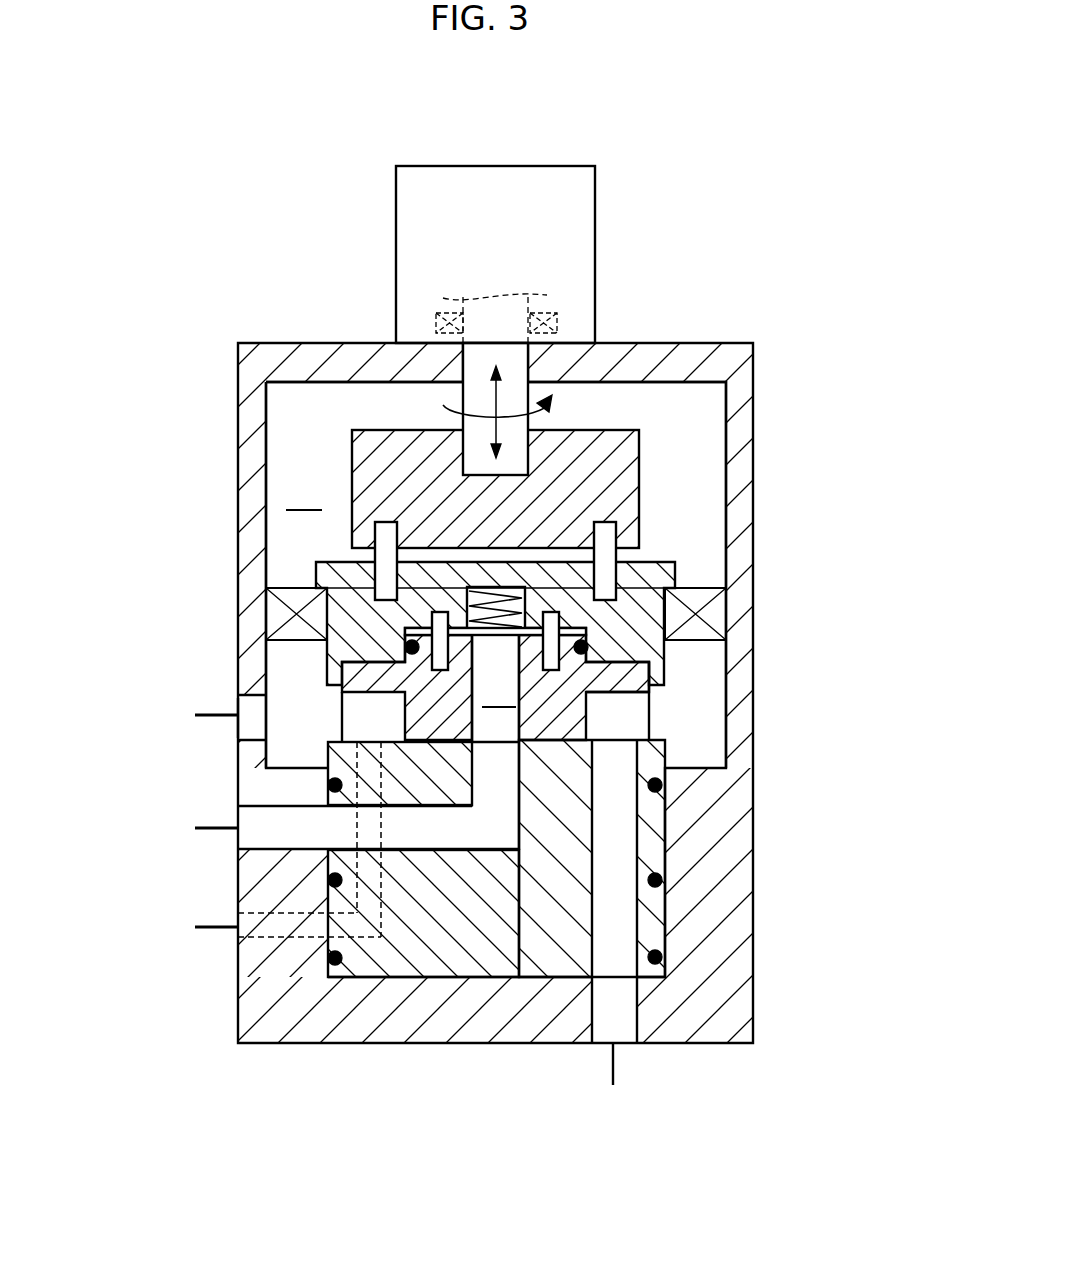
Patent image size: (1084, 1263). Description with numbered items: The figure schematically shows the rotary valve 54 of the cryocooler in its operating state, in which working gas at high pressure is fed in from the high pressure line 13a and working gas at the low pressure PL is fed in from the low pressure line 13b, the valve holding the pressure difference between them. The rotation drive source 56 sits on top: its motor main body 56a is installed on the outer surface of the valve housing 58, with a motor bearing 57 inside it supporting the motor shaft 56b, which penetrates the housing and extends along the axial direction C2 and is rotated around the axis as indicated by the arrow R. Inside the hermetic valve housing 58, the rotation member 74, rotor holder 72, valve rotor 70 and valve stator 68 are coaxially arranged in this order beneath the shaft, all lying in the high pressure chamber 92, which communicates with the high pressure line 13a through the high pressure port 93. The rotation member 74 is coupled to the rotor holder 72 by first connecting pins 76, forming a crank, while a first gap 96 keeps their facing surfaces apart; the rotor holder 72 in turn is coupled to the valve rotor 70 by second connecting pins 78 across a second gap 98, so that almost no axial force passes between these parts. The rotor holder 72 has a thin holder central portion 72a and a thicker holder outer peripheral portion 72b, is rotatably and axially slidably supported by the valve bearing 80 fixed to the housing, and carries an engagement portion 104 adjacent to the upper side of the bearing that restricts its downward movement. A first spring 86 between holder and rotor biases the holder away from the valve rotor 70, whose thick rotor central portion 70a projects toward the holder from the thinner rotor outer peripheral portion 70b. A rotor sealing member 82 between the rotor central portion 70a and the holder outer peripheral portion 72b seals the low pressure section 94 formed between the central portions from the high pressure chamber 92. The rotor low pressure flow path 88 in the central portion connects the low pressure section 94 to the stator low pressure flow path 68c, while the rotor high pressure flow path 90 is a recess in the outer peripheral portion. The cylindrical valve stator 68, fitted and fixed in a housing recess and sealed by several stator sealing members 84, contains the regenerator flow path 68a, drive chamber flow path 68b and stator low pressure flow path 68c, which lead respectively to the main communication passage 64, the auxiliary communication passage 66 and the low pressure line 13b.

The high pressure line 13a is at (210, 720).
The low pressure line 13b is at (210, 832).
The rotary valve 54 is at (512, 1224).
The rotation drive source 56 is at (520, 212).
The motor main body 56a is at (565, 222).
The motor shaft 56b is at (517, 368).
The motor bearing 57 is at (548, 308).
The valve housing 58 is at (246, 410).
The main communication passage 64 is at (615, 1065).
The auxiliary communication passage 66 is at (210, 929).
The valve stator 68 is at (388, 958).
The regenerator flow path 68a is at (607, 1003).
The drive chamber flow path 68b is at (290, 937).
The stator low pressure flow path 68c is at (445, 838).
The valve rotor 70 is at (627, 806).
The rotor central portion 70a is at (668, 762).
The rotor outer peripheral portion 70b is at (652, 712).
The rotor holder 72 is at (613, 607).
The holder central portion 72a is at (678, 566).
The holder outer peripheral portion 72b is at (668, 606).
The rotation member 74 is at (630, 440).
The first connecting pin 76 is at (378, 540).
The second connecting pin 78 is at (432, 640).
The valve bearing 80 is at (588, 632).
The rotor sealing member 82 is at (345, 655).
The stator sealing member 84 is at (662, 957).
The first spring 86 is at (300, 600).
The rotor low pressure flow path 88 is at (340, 770).
The rotor high pressure flow path 90 is at (372, 718).
The high pressure chamber 92 is at (282, 462).
The high pressure port 93 is at (240, 702).
The low pressure section 94 is at (525, 605).
The first gap 96 is at (422, 575).
The second gap 98 is at (588, 705).
The engagement portion 104 is at (615, 562).
The axial direction C2 is at (466, 405).
The rotation around the axis R is at (443, 410).
The low pressure PL is at (495, 688).